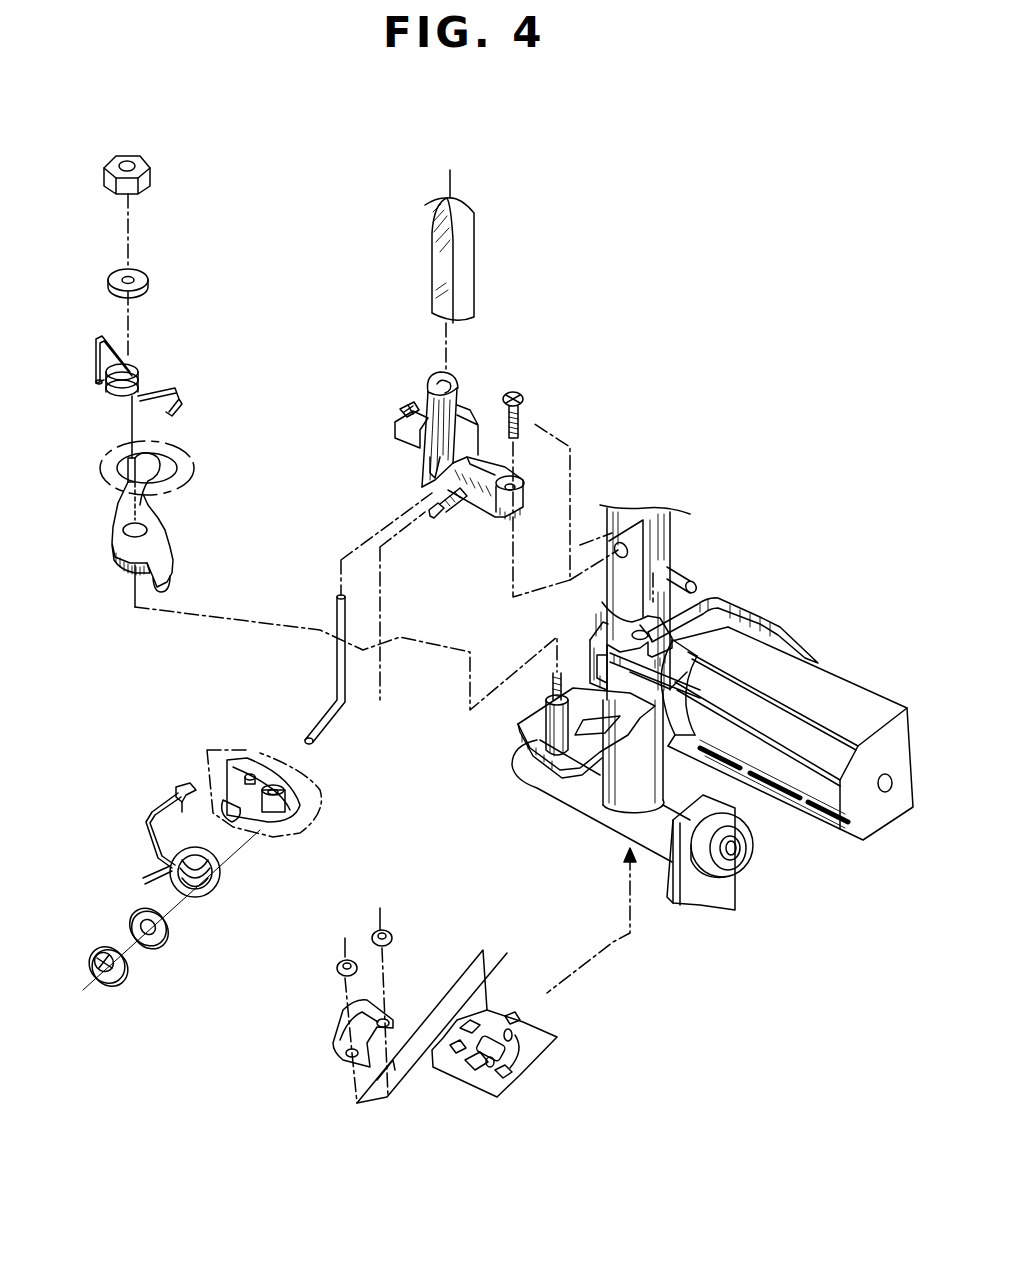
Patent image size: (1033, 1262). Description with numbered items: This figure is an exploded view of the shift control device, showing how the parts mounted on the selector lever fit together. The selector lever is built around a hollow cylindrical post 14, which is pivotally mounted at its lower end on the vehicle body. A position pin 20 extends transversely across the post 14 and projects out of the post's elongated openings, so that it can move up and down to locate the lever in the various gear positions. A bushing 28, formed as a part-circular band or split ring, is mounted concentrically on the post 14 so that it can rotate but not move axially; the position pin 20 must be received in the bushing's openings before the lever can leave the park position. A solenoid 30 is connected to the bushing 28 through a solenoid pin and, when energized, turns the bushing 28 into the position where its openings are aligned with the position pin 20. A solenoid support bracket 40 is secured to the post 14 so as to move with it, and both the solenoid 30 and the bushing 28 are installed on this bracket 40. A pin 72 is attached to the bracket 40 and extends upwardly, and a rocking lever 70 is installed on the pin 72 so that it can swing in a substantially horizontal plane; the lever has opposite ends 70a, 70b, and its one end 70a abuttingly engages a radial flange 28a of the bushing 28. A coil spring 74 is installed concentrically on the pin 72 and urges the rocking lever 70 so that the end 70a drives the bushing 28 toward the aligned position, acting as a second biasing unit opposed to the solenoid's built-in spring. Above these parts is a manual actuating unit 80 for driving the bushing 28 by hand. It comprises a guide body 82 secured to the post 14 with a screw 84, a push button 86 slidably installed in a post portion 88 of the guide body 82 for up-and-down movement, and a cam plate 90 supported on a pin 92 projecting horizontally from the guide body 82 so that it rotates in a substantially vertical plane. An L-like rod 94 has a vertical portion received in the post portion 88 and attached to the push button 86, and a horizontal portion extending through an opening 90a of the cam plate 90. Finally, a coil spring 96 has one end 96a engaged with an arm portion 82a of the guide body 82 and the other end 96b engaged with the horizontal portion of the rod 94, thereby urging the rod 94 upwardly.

The hollow cylindrical post 14 is at (668, 537).
The position pin 20 is at (693, 583).
The bushing 28 is at (602, 597).
The radial flange 28a is at (597, 640).
The solenoid 30 is at (833, 690).
The solenoid support bracket 40 is at (537, 733).
The rocking lever 70 is at (125, 518).
The one end of rocking lever 70a is at (150, 462).
The other end of rocking lever 70b is at (167, 575).
The pin 72 is at (550, 760).
The coil spring 74 is at (148, 373).
The manual actuating unit 80 is at (490, 302).
The guide body 82 is at (468, 393).
The arm portion 82a is at (402, 423).
The screw 84 is at (527, 400).
The push button 86 is at (442, 260).
The post portion 88 is at (440, 427).
The cam plate 90 is at (292, 812).
The opening of cam plate 90a is at (252, 777).
The pin 92 is at (433, 510).
The L-like rod 94 is at (347, 620).
The coil spring 96 is at (143, 823).
The end of coil spring 96a is at (180, 790).
The other end of coil spring 96b is at (223, 850).